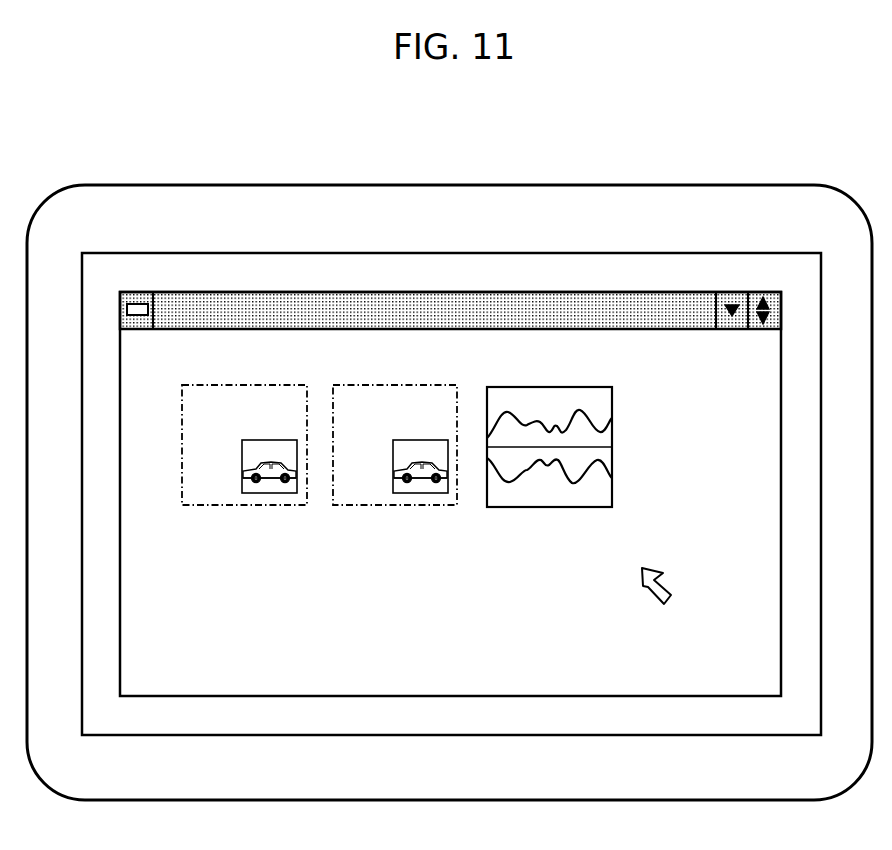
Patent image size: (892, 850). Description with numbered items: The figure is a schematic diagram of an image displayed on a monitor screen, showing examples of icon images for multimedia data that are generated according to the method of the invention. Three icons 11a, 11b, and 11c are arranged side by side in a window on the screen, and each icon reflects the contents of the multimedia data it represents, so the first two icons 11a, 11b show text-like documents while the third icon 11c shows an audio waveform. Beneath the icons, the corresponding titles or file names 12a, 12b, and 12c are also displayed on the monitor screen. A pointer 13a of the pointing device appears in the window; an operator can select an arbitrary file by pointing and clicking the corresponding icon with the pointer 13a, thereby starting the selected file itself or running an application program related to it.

The icon 11a is at (196, 385).
The icon 11b is at (347, 385).
The icon 11c is at (499, 387).
The title or file name 12a is at (241, 545).
The title or file name 12b is at (390, 545).
The title or file name 12c is at (544, 545).
The pointer 13a is at (673, 587).